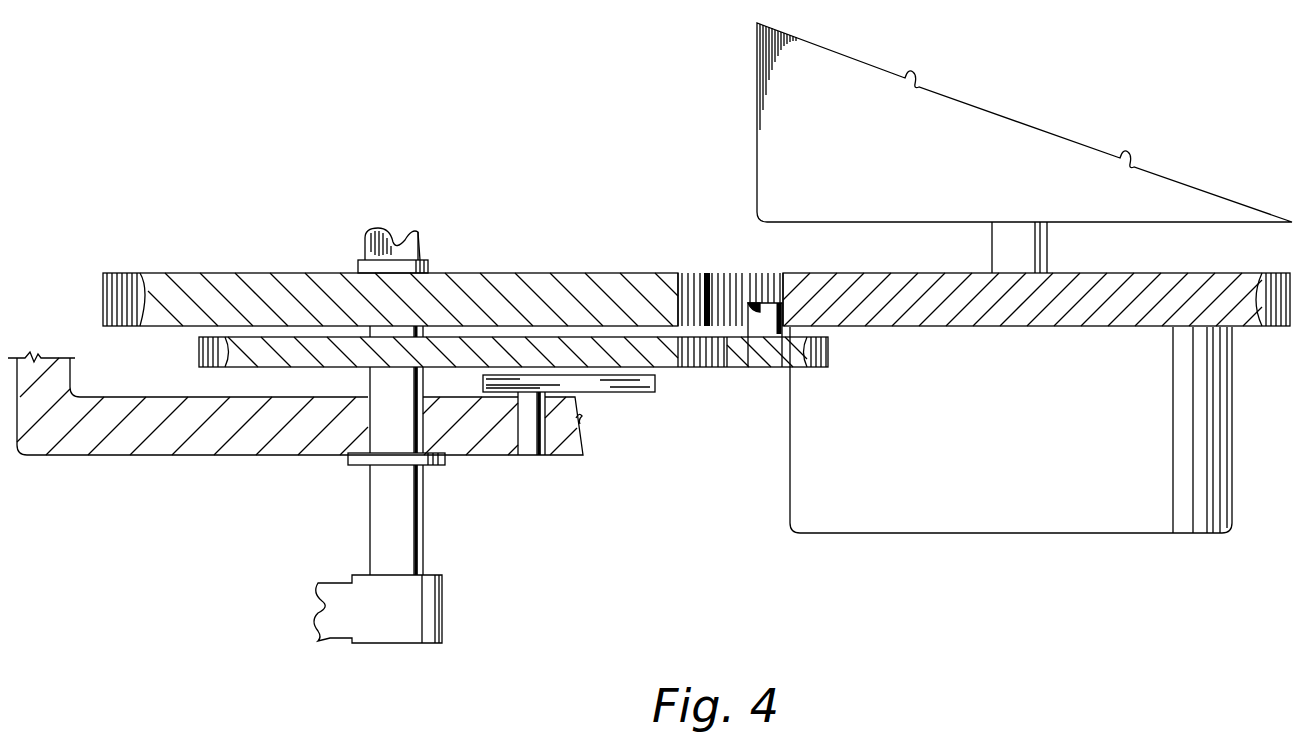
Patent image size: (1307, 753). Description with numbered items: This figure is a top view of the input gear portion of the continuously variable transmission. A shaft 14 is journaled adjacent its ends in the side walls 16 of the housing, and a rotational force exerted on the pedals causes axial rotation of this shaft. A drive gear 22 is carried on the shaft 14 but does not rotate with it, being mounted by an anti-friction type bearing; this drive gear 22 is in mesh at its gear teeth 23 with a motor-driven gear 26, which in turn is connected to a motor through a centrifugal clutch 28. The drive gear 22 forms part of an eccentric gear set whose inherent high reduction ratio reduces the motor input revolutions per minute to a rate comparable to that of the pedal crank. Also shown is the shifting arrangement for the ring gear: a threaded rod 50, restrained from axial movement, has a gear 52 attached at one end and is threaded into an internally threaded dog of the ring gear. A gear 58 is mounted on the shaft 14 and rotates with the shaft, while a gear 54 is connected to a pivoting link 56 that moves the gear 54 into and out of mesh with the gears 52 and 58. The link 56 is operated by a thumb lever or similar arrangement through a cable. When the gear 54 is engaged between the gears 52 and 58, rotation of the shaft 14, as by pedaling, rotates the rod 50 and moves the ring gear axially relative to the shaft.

The shaft 14 is at (382, 514).
The side walls 16 is at (248, 458).
The drive gear 22 is at (483, 282).
The gear teeth 23 is at (730, 290).
The motor-driven gear 26 is at (1095, 278).
The centrifugal clutch 28 is at (990, 441).
The threaded rod 50 is at (757, 325).
The gear 52 is at (772, 362).
The gear 54 is at (677, 362).
The pivoting link 56 is at (600, 393).
The gear 58 is at (286, 358).